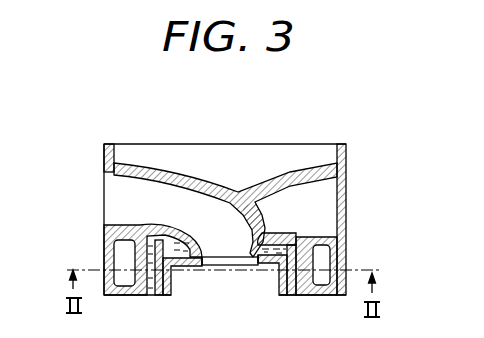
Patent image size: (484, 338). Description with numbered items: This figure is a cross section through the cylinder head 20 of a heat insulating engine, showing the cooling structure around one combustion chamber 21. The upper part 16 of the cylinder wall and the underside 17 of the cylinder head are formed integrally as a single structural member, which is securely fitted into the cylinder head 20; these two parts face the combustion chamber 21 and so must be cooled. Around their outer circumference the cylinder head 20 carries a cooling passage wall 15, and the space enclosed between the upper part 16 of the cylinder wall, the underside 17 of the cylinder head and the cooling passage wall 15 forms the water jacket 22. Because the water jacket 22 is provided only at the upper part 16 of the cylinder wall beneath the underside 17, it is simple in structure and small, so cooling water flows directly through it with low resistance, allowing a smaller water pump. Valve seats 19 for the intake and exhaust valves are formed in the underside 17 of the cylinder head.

The cooling passage wall 15 is at (128, 244).
The upper part of the cylinder wall 16 is at (171, 282).
The underside of the cylinder head 17 is at (187, 263).
The valve seats 19 is at (246, 255).
The cylinder head 20 is at (347, 201).
The combustion chamber 21 is at (228, 266).
The water jacket 22 is at (170, 236).